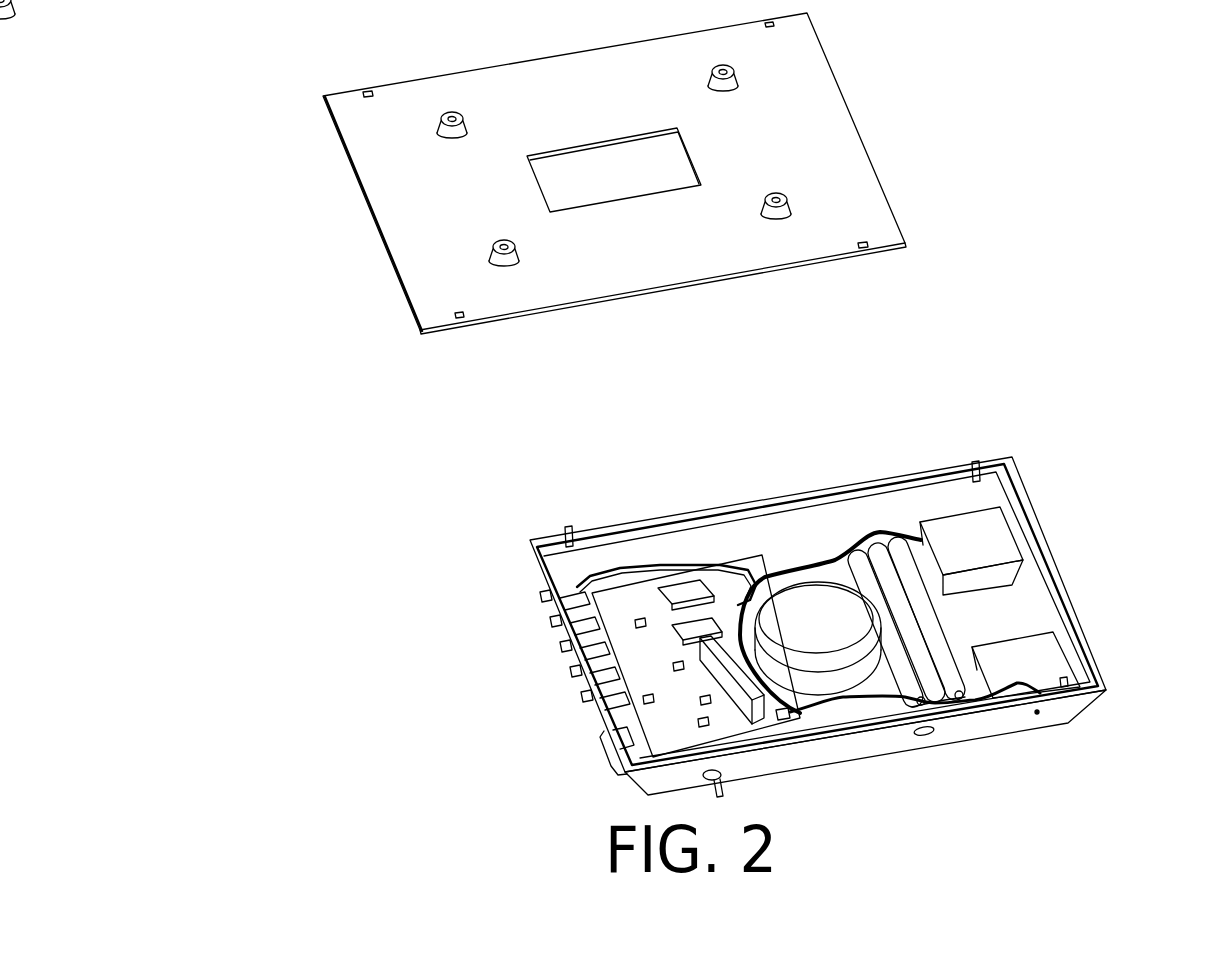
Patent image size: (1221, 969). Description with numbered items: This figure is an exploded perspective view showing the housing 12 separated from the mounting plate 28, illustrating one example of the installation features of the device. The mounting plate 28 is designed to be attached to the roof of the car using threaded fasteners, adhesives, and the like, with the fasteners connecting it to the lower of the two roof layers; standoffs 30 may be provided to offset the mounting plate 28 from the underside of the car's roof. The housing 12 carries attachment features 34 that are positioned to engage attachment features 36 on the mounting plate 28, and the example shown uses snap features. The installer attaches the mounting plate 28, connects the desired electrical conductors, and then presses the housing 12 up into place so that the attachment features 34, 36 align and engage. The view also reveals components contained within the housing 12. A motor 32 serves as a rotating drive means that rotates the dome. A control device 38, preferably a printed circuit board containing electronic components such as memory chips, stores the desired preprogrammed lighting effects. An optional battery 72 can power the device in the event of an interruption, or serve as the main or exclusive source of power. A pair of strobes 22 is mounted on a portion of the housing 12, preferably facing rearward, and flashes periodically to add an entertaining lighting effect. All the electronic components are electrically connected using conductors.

The housing 12 is at (835, 645).
The strobes 22 is at (1018, 665).
The mounting plate 28 is at (398, 322).
The standoffs 30 is at (787, 202).
The motor 32 is at (746, 549).
The attachment features 34 is at (491, 472).
The attachment features 36 is at (457, 315).
The control device 38 is at (625, 678).
The battery 72 is at (840, 525).